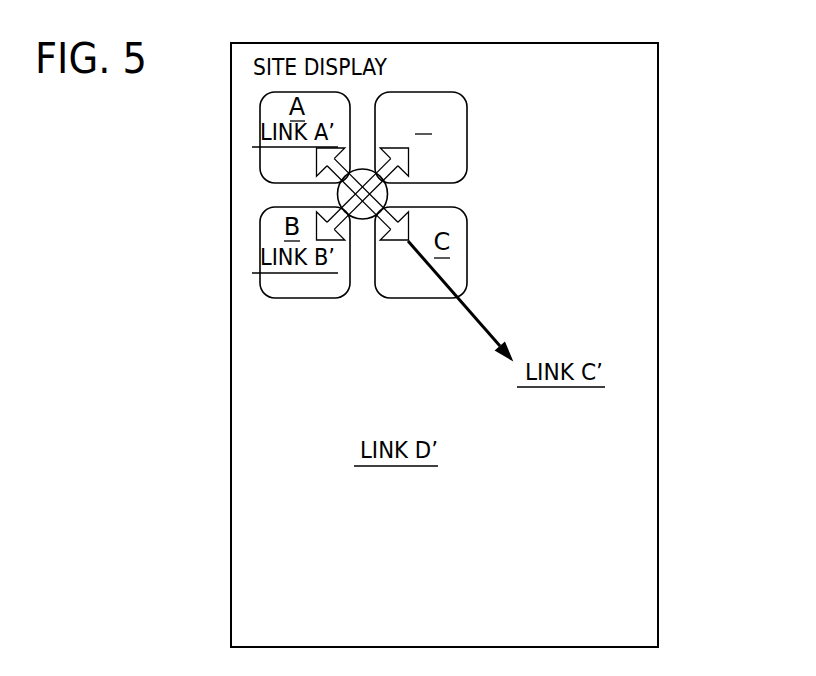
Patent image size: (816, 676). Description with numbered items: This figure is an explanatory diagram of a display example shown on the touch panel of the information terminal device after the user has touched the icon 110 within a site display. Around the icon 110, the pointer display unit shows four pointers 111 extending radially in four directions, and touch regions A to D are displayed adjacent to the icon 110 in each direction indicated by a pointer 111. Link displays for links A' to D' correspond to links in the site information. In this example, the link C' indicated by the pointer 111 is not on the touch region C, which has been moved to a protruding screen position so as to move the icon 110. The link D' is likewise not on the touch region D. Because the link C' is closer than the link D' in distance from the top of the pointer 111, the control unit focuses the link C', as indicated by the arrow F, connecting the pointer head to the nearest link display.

The icon 110 is at (359, 221).
The pointer 111 is at (407, 162).
The arrow F is at (483, 320).